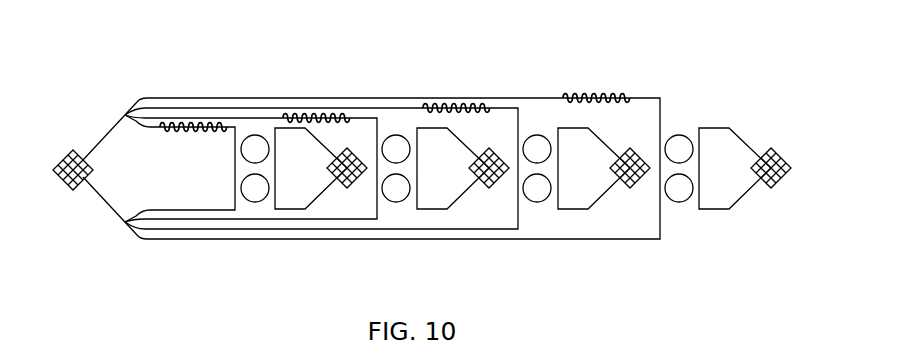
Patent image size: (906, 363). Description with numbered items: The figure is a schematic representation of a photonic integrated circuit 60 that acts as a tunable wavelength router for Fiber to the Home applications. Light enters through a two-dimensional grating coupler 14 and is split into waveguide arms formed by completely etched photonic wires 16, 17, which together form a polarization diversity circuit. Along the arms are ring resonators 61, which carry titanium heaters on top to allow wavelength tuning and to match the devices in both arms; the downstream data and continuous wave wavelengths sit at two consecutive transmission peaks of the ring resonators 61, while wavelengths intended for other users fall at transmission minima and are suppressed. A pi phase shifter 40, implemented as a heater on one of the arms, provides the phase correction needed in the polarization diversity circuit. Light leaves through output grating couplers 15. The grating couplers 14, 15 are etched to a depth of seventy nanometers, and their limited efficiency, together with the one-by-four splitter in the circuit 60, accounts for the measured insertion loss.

The grating coupler 14 is at (65, 163).
The grating coupler 15 is at (343, 173).
The photonic wire 16 is at (109, 132).
The photonic wire 17 is at (101, 197).
The π phase shifter 40 is at (178, 125).
The wavelength router 60 is at (720, 94).
The ring resonator 61 is at (253, 146).